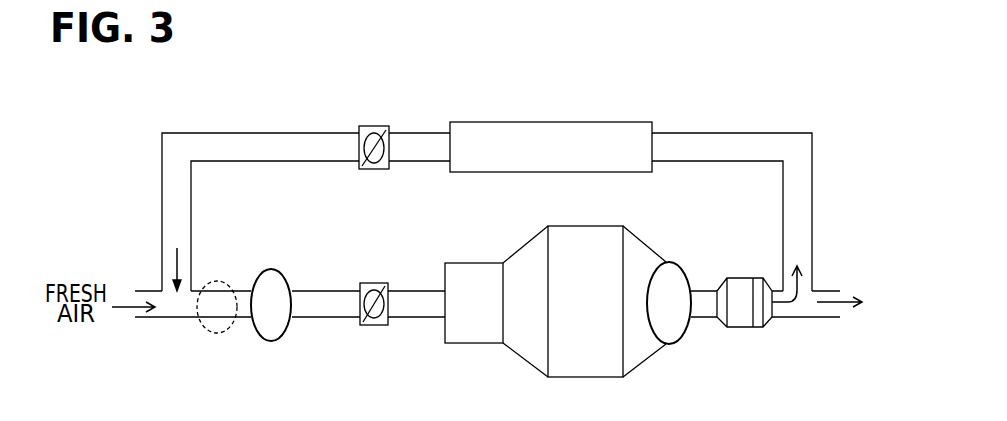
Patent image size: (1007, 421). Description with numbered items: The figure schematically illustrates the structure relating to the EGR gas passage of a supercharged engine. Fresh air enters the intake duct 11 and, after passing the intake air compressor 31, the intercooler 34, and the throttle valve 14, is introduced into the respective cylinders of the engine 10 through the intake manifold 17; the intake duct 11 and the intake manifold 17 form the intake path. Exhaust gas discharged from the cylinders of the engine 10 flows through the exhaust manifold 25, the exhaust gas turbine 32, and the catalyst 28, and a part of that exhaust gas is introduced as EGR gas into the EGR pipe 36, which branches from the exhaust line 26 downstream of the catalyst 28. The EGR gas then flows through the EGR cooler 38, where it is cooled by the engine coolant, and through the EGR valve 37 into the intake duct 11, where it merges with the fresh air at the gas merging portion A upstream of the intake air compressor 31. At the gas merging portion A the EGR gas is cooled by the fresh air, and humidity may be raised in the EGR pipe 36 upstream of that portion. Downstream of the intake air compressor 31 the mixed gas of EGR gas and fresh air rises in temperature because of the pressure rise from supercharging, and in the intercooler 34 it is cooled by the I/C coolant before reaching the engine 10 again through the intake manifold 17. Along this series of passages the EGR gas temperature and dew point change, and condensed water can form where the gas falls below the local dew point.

The engine 10 is at (585, 377).
The intake duct 11 is at (325, 318).
The throttle valve 14 is at (383, 325).
The intake manifold 17 is at (531, 365).
The exhaust manifold 25 is at (640, 367).
The exhaust pipe 26 is at (815, 317).
The catalyst 28 is at (742, 327).
The intake air compressor 31 is at (277, 341).
The exhaust gas turbine 32 is at (683, 342).
The intercooler 34 is at (470, 343).
The EGR pipe 36 is at (268, 133).
The EGR valve 37 is at (377, 126).
The EGR cooler 38 is at (630, 122).
The gas merging portion A is at (217, 333).